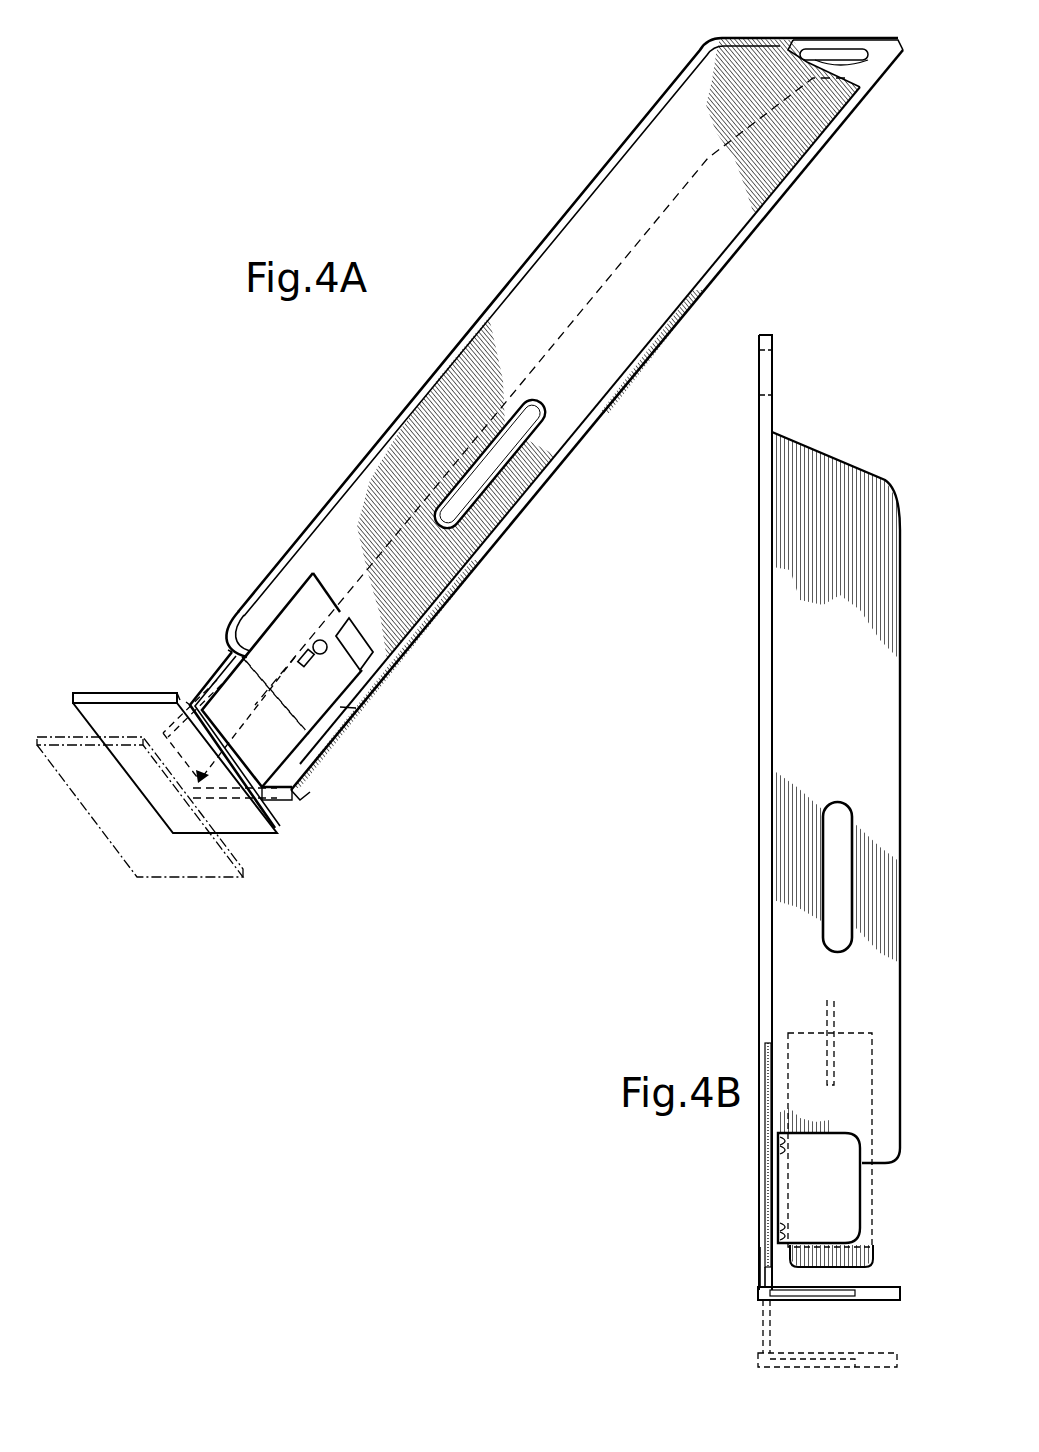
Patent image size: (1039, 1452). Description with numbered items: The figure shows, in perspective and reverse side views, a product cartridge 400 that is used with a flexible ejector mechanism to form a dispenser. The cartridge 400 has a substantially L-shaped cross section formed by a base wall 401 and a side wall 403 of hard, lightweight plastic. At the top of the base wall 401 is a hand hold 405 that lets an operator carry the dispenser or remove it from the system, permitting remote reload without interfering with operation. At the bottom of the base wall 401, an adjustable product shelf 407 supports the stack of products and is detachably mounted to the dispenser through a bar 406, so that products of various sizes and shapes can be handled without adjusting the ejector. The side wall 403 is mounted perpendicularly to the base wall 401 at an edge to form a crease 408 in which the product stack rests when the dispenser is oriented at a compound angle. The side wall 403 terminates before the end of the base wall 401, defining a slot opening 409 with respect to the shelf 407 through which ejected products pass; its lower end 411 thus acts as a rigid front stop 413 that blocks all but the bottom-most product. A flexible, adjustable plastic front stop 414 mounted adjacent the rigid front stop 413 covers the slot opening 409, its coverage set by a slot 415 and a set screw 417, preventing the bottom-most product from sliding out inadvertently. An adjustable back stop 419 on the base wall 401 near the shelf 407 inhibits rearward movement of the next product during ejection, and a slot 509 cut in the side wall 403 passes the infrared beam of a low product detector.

In FIG. 4A, the product cartridge 400 is at (336, 828).
In FIG. 4B, the product cartridge 400 is at (745, 898).
In FIG. 4A, the base wall 401 is at (773, 202).
In FIG. 4B, the base wall 401 is at (763, 583).
In FIG. 4A, the side wall 403 is at (596, 208).
In FIG. 4B, the side wall 403 is at (787, 711).
In FIG. 4A, the hand hold 405 is at (847, 67).
In FIG. 4B, the hand hold 405 is at (768, 367).
In FIG. 4B, the bar 406 is at (763, 1267).
In FIG. 4A, the product shelf 407 is at (278, 830).
In FIG. 4B, the product shelf 407 is at (888, 1358).
In FIG. 4B, the crease 408 is at (800, 1000).
In FIG. 4A, the slot opening 409 is at (333, 777).
In FIG. 4B, the slot opening 409 is at (880, 1222).
In FIG. 4A, the lower end 411 is at (250, 603).
In FIG. 4B, the lower end 411 is at (900, 1160).
In FIG. 4A, the rigid front stop 413 is at (356, 708).
In FIG. 4B, the rigid front stop 413 is at (783, 1117).
In FIG. 4A, the flexible front stop 414 is at (228, 672).
In FIG. 4B, the flexible front stop 414 is at (870, 1253).
In FIG. 4A, the slot 415 is at (350, 619).
In FIG. 4B, the slot 415 is at (833, 1000).
In FIG. 4A, the set screw 417 is at (328, 652).
In FIG. 4A, the back stop 419 is at (208, 683).
In FIG. 4B, the back stop 419 is at (795, 1185).
In FIG. 4A, the slot 509 is at (478, 475).
In FIG. 4B, the slot 509 is at (837, 858).